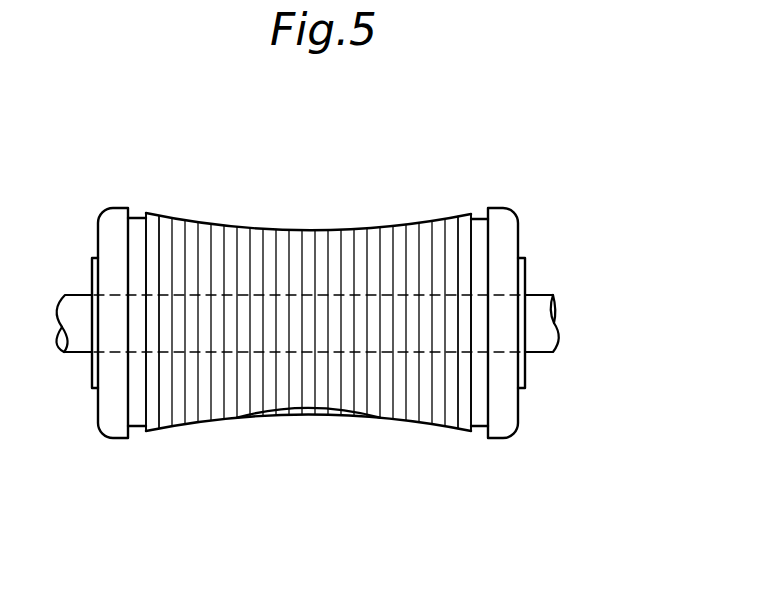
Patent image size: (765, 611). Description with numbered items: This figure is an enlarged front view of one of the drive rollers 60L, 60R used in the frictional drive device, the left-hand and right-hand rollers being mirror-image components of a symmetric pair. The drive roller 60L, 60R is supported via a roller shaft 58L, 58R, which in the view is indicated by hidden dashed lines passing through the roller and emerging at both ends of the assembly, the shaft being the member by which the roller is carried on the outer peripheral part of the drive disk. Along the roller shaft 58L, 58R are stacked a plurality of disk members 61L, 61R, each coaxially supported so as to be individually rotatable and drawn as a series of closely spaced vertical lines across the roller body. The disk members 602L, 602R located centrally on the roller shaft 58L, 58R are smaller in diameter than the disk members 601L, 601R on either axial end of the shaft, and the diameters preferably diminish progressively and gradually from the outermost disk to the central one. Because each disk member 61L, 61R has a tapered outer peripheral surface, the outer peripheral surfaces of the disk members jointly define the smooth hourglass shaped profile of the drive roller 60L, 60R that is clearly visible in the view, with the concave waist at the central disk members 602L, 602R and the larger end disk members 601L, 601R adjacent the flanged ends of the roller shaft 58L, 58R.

The drive roller 60L is at (367, 360).
The drive roller 60R is at (367, 360).
The disk member 61L is at (308, 284).
The disk member 61R is at (311, 232).
The disk member on axial end 601L is at (337, 368).
The disk member on axial end 601R is at (153, 435).
The centrally located disk member 602L is at (307, 498).
The centrally located disk member 602R is at (310, 412).
The roller shaft 58L is at (375, 347).
The roller shaft 58R is at (463, 353).